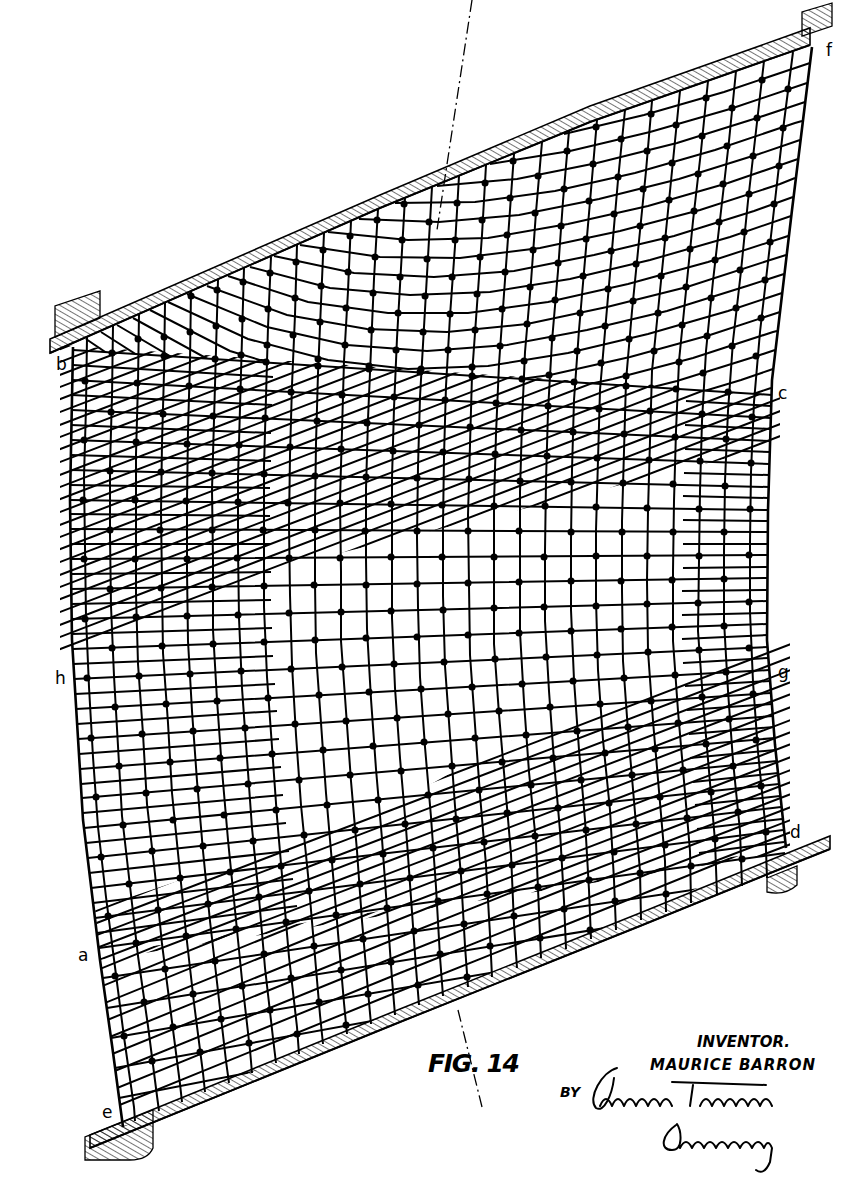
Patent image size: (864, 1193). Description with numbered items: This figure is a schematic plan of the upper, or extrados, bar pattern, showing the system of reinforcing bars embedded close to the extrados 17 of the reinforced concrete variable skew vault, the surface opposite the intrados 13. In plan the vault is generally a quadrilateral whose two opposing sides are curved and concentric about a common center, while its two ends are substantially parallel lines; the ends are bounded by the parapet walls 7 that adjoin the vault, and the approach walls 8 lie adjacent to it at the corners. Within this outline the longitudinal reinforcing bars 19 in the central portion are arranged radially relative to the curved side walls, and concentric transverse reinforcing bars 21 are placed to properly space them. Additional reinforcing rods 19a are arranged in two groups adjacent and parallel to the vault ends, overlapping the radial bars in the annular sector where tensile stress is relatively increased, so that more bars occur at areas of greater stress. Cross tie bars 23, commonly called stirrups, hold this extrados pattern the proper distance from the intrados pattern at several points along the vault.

The parapet walls 7 is at (312, 238).
The approach walls 8 is at (62, 320).
The intrados 13 is at (736, 893).
The extrados 17 is at (772, 700).
The longitudinal reinforcing bars 19 is at (436, 934).
The additional reinforcing rods 19a is at (110, 1008).
The concentric transverse reinforcing bars 21 is at (418, 296).
The cross tie bars 23 is at (84, 736).